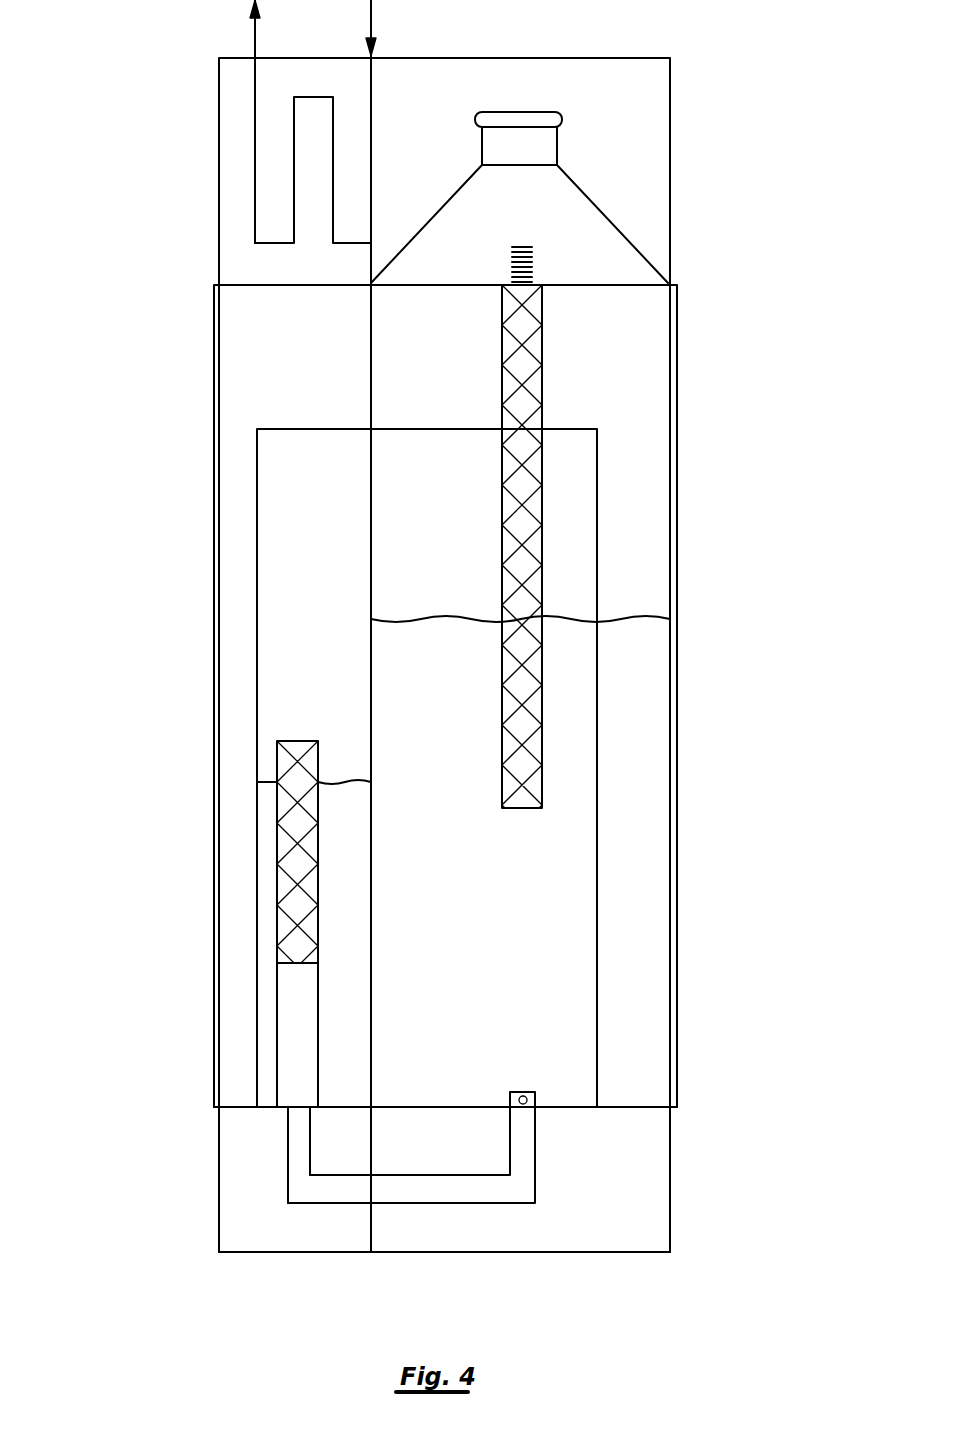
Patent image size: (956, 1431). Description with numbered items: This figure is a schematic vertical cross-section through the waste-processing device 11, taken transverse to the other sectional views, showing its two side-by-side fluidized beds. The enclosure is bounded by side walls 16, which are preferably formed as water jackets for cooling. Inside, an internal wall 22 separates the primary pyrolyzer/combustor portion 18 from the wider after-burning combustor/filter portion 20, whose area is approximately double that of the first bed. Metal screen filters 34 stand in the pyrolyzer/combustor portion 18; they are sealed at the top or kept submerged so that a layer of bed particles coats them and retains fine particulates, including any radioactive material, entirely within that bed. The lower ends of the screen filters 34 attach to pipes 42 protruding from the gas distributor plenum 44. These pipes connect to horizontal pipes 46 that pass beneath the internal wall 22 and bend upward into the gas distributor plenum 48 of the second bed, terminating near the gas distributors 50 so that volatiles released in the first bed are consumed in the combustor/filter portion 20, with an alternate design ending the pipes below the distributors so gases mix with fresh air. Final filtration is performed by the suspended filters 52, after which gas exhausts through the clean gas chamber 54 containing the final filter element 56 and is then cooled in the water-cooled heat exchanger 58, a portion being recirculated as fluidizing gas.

The device 11 is at (172, 474).
The side walls 16 is at (213, 583).
The primary pyrolyzer/combustor portion 18 is at (205, 962).
The after-burning combustor/filter portion 20 is at (486, 956).
The internal wall 22 is at (371, 497).
The metal screen filters 34 is at (277, 828).
The pipes 42 is at (277, 1025).
The gas distributor plenum 44 is at (238, 1172).
The horizontal pipes 46 is at (455, 1203).
The gas distributor plenum 48 is at (642, 1190).
The gas distributors 50 is at (525, 1095).
The suspended filters 52 is at (542, 395).
The clean gas chamber 54 is at (613, 274).
The final filter element 56 is at (538, 142).
The water-cooled heat exchanger 58 is at (232, 250).